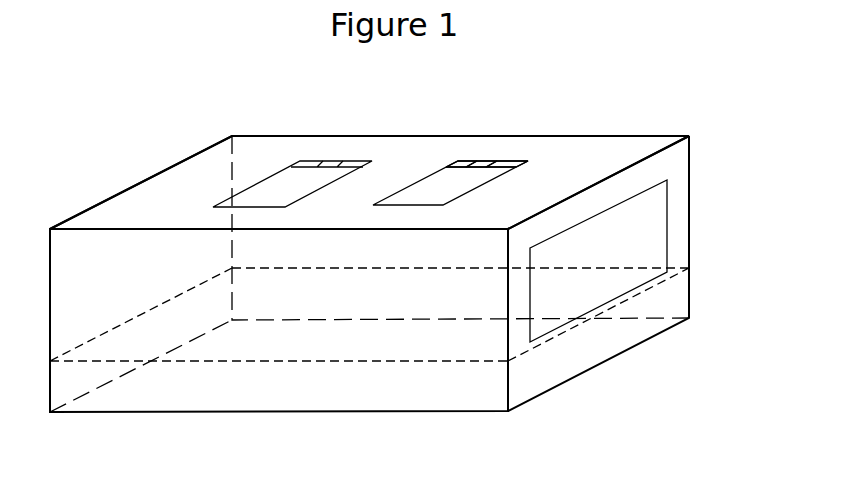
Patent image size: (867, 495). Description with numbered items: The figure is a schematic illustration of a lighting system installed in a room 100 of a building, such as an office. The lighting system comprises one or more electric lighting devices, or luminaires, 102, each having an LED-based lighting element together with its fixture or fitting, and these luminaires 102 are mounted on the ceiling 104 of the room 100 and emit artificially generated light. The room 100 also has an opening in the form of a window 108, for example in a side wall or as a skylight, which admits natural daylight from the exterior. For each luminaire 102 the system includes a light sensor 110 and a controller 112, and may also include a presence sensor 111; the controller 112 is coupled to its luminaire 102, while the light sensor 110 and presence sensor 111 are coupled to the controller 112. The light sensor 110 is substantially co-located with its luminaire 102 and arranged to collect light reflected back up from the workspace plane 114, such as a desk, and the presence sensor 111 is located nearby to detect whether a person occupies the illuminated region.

The room 100 is at (392, 229).
The lighting device 102 is at (390, 208).
The ceiling 104 is at (391, 145).
The window 108 is at (653, 243).
The light sensor 110 is at (467, 163).
The presence sensor 111 is at (497, 162).
The controller 112 is at (517, 160).
The workspace plane 114 is at (290, 360).